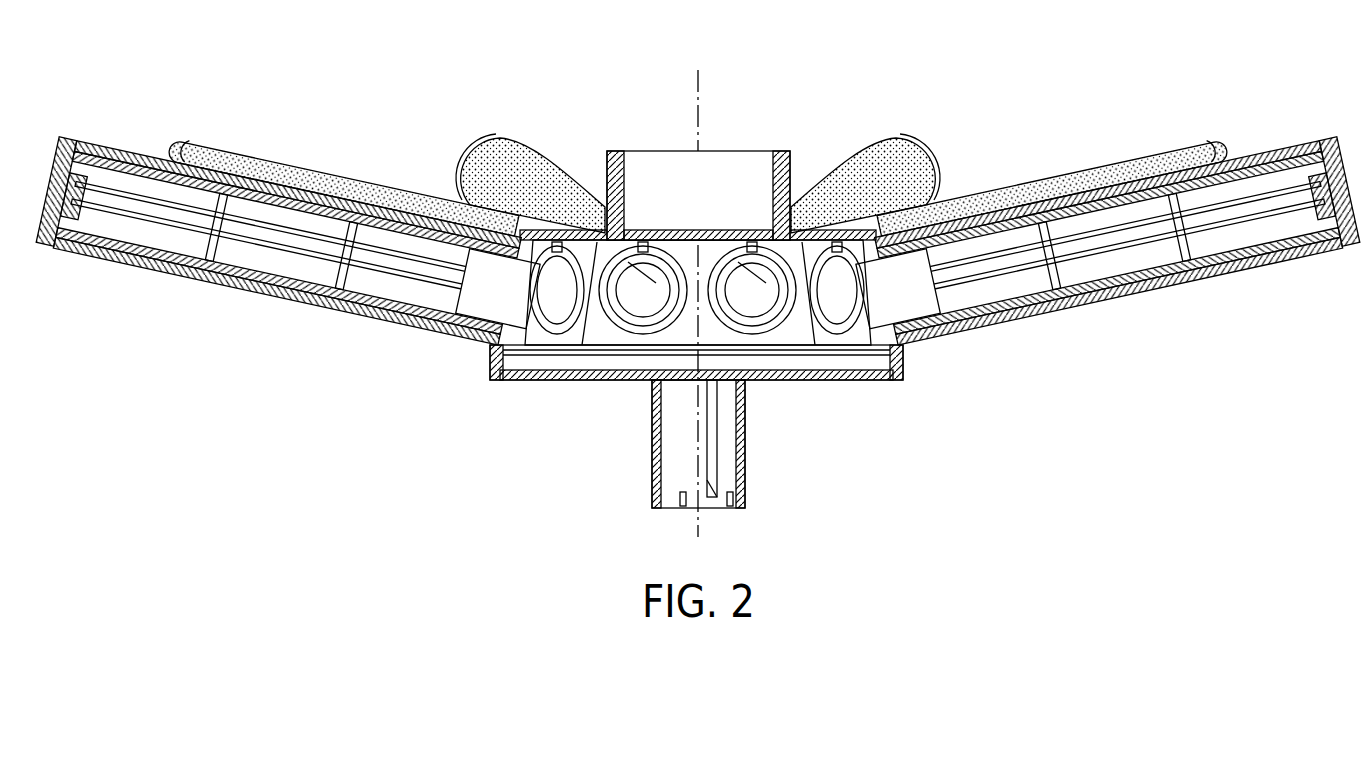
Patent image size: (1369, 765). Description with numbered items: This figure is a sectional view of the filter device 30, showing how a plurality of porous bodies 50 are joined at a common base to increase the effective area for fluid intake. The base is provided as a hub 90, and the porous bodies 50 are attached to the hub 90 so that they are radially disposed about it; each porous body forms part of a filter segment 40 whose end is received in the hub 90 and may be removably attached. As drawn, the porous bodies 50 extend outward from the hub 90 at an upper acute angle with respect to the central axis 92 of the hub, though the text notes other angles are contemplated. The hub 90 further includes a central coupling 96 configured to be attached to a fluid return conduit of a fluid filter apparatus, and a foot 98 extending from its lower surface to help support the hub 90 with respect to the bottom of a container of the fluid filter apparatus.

The filter device 30 is at (698, 271).
The filter segment 40 is at (293, 194).
The porous bodies 50 is at (1103, 253).
The hub 90 is at (698, 313).
The central axis 92 is at (698, 98).
The central coupling 96 is at (790, 156).
The foot 98 is at (745, 455).